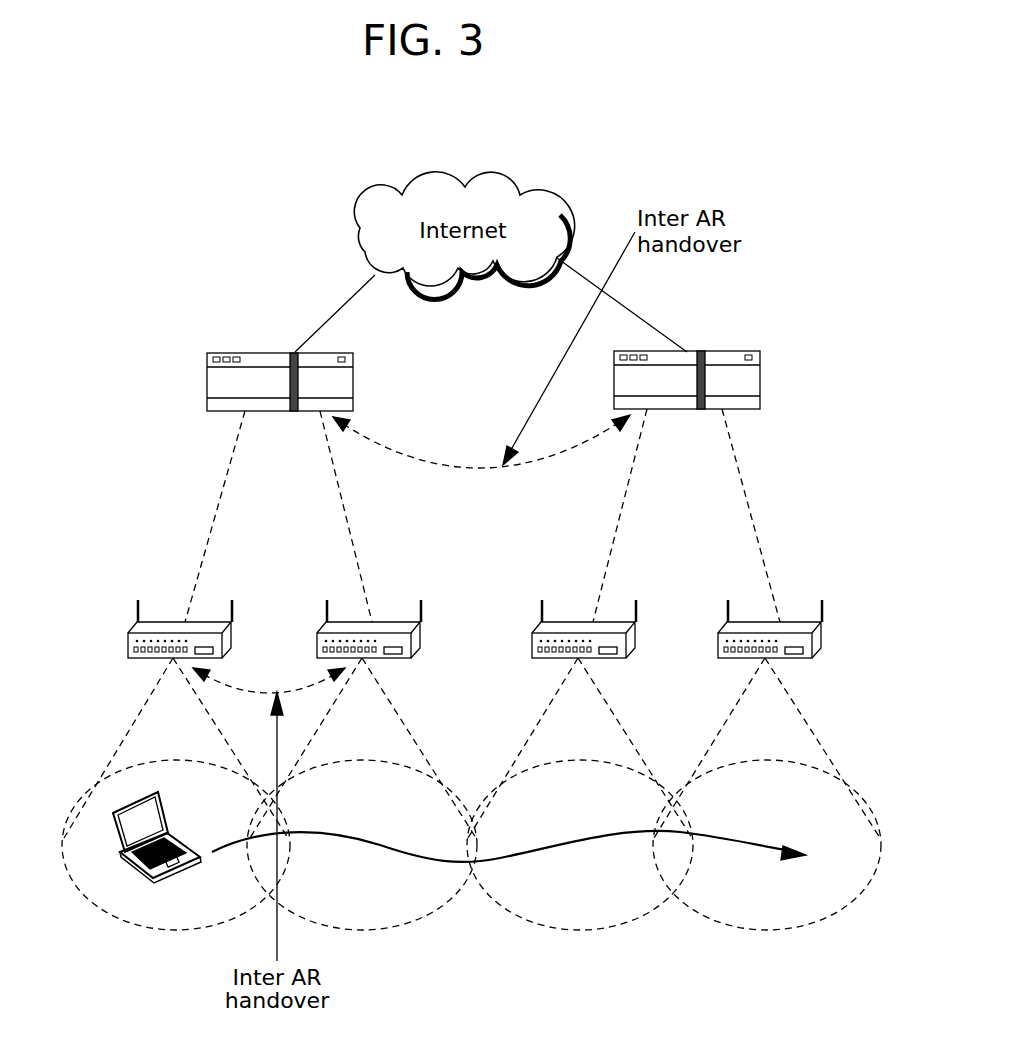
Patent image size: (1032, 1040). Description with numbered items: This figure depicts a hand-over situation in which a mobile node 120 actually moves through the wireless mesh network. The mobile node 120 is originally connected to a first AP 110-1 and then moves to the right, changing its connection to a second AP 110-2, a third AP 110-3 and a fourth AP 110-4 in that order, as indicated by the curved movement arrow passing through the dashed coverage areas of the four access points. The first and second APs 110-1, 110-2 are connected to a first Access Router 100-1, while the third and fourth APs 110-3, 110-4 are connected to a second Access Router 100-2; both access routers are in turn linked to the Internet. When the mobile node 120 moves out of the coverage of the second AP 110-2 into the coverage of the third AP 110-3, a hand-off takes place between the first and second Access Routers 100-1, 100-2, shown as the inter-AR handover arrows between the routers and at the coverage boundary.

The first Access Router 100-1 is at (354, 383).
The second Access Router 100-2 is at (761, 381).
The first AP 110-1 is at (127, 637).
The second AP 110-2 is at (412, 632).
The third AP 110-3 is at (627, 633).
The fourth AP 110-4 is at (822, 633).
The mobile node 120 is at (163, 880).